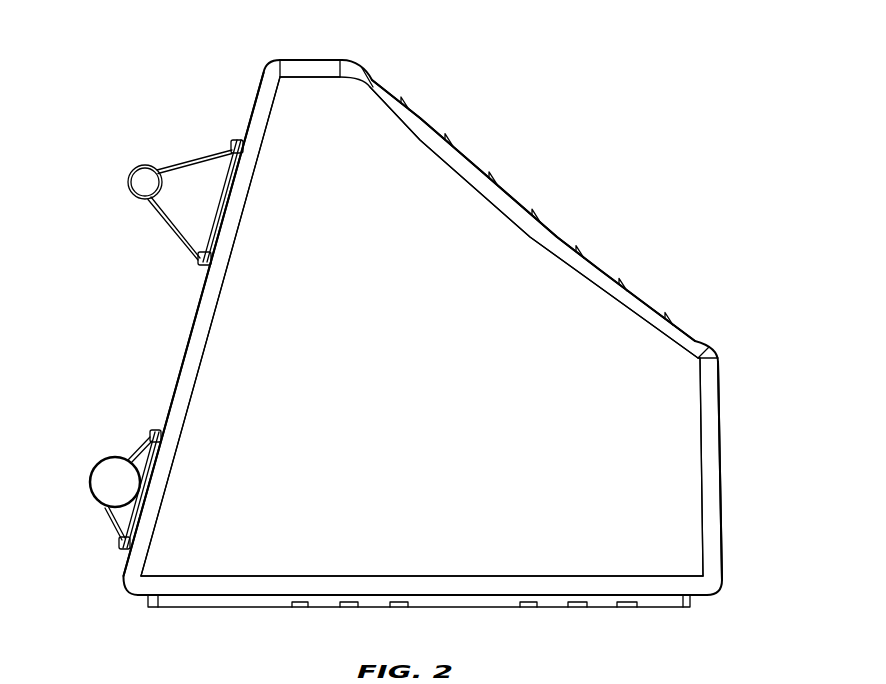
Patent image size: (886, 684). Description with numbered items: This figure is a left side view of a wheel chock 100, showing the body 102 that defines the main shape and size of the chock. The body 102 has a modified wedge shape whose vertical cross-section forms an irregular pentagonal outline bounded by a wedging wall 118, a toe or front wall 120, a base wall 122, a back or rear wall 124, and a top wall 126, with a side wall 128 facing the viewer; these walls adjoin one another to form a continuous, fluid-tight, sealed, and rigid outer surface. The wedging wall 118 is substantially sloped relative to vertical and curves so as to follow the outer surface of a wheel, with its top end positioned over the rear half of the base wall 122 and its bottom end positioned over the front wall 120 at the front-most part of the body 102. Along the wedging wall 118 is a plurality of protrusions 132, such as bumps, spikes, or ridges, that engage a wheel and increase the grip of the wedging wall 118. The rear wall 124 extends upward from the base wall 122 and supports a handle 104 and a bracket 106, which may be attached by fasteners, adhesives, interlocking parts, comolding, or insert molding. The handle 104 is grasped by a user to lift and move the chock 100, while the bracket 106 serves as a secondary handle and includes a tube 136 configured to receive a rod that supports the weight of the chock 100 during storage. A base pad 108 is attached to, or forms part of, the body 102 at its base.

The wheel chock 100 is at (172, 78).
The body 102 is at (370, 64).
The handle 104 is at (133, 175).
The bracket 106 is at (103, 462).
The base pad 108 is at (450, 607).
The wedging wall 118 is at (560, 235).
The front wall 120 is at (718, 413).
The base wall 122 is at (593, 597).
The rear wall 124 is at (190, 333).
The top wall 126 is at (307, 60).
The side wall 128 is at (245, 540).
The protrusions 132 is at (490, 172).
The tube 136 is at (135, 486).